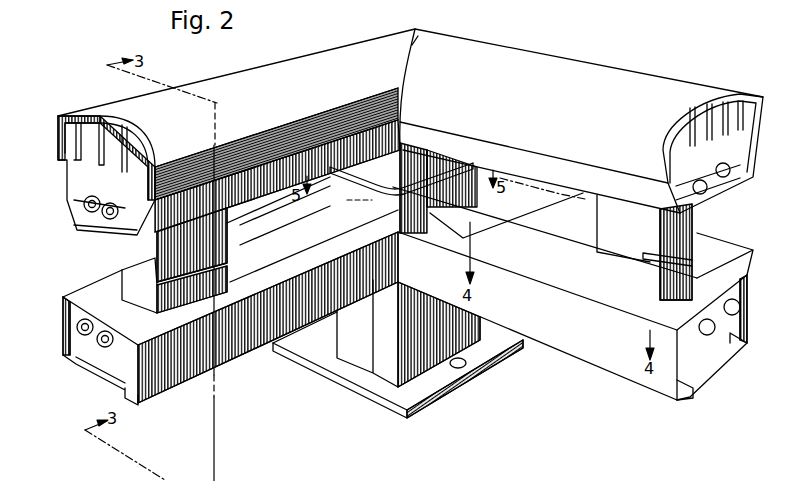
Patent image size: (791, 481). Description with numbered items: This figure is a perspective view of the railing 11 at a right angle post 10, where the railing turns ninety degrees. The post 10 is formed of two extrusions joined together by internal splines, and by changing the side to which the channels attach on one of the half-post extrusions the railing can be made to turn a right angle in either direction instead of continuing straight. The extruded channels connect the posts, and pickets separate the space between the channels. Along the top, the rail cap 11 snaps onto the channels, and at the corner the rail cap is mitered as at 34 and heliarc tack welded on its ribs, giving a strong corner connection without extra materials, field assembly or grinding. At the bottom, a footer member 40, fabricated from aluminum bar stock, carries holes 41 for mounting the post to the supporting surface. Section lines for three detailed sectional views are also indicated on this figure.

The post 10 is at (325, 343).
The rail cap 11 is at (270, 67).
The mitered corner 34 is at (416, 42).
The footer member 40 is at (423, 412).
The holes 41 is at (474, 364).